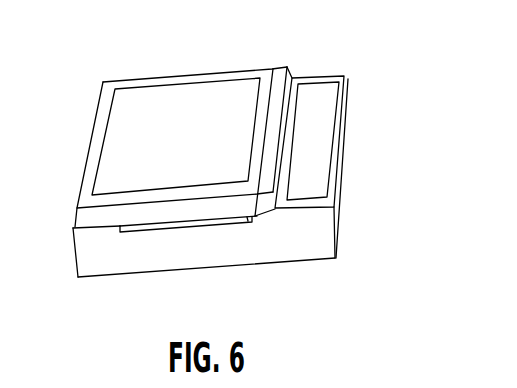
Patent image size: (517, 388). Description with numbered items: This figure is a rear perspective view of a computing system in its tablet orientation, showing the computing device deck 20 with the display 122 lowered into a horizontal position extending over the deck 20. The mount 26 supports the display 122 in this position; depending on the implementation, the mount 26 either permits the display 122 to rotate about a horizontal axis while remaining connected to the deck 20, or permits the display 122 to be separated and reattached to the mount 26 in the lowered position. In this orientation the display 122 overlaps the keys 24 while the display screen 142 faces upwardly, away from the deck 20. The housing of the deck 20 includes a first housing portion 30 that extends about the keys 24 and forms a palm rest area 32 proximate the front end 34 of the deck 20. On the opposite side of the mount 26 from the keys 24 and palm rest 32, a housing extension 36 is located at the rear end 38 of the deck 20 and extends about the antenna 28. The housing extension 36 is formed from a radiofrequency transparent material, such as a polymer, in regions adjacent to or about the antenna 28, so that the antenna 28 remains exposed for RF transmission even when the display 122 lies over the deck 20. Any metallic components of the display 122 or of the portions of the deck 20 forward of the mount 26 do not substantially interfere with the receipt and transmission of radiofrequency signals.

The computing device deck 20 is at (73, 240).
The keys 24 is at (181, 227).
The mount 26 is at (283, 65).
The antenna 28 is at (326, 78).
The first housing portion 30 is at (257, 217).
The palm rest area 32 is at (101, 227).
The front end 34 is at (48, 250).
The housing extension 36 is at (338, 195).
The rear end 38 is at (381, 88).
The display 122 is at (187, 75).
The display screen 142 is at (218, 103).